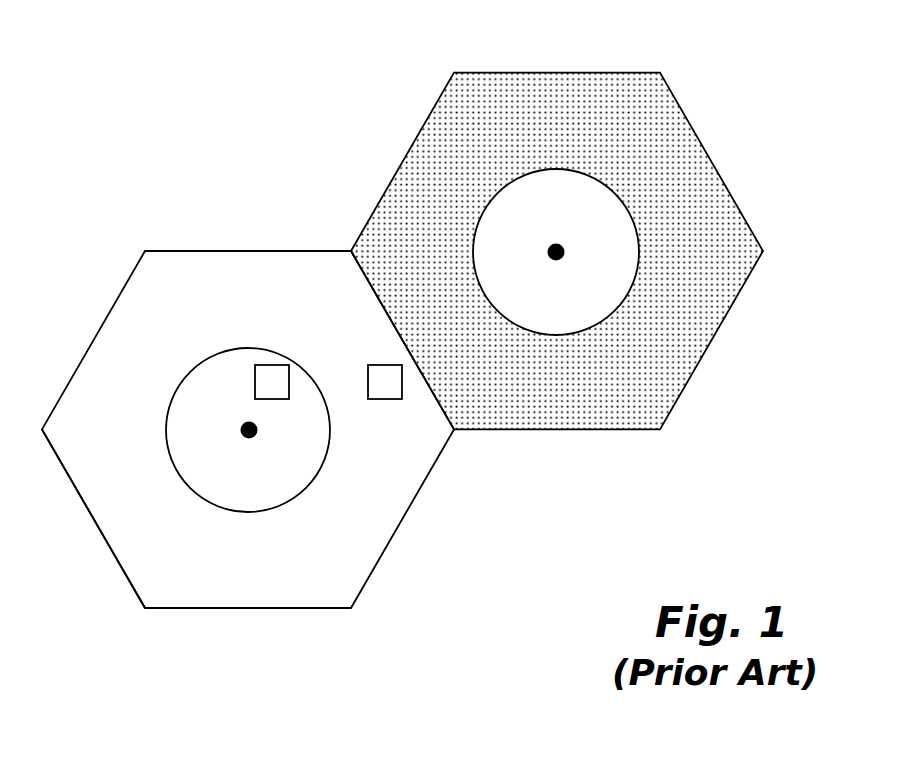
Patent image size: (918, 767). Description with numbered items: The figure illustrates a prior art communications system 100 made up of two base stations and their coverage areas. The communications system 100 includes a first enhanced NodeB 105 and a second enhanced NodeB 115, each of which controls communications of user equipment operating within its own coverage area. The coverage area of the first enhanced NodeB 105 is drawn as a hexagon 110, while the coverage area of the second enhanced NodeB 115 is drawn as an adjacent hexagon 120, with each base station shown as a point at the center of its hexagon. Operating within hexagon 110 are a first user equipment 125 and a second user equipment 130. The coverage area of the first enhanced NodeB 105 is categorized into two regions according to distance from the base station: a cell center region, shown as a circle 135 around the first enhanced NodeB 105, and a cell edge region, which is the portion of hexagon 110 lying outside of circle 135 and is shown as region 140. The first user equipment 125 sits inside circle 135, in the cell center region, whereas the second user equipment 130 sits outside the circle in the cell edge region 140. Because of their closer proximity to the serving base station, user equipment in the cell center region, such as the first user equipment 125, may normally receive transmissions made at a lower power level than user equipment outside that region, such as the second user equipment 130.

The communications system 100 is at (151, 104).
The first enhanced NodeB 105 is at (249, 437).
The hexagon 110 is at (92, 344).
The second enhanced NodeB 115 is at (556, 259).
The hexagon 120 is at (631, 72).
The first user equipment 125 is at (270, 365).
The second user equipment 130 is at (387, 400).
The circle 135 is at (240, 349).
The region 140 is at (123, 548).